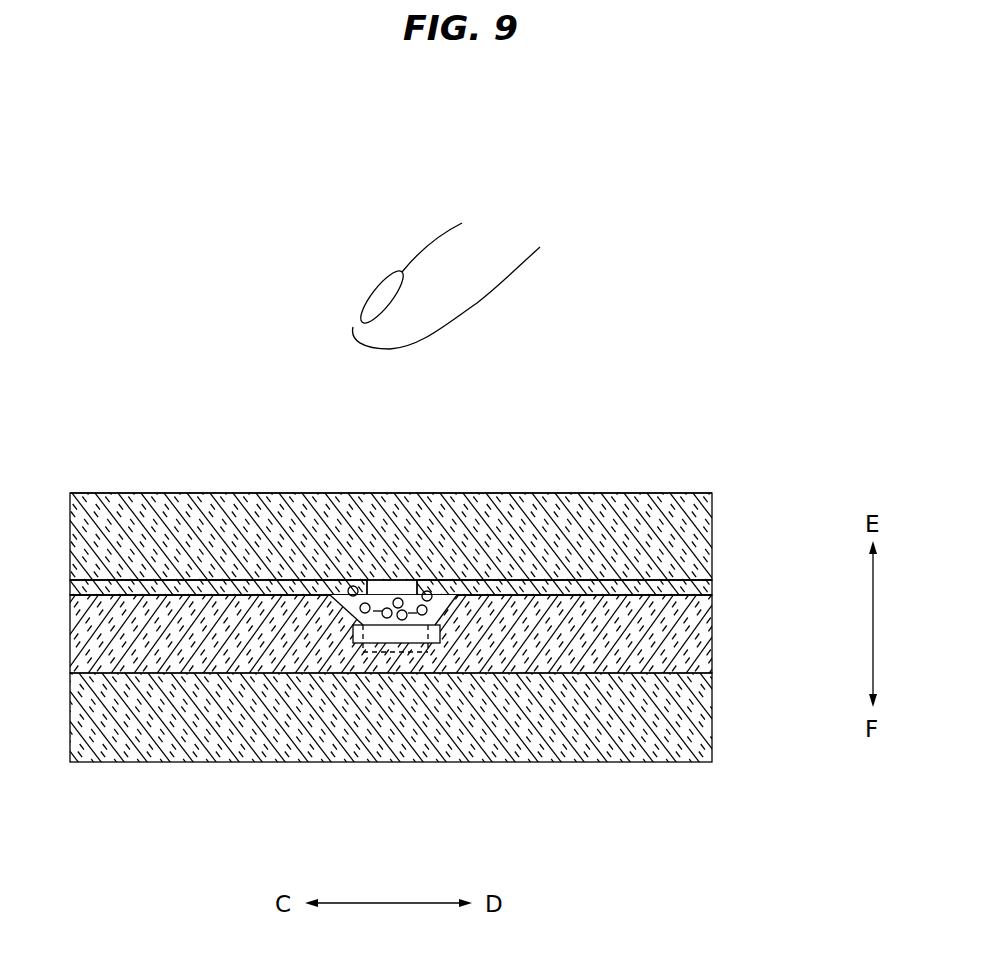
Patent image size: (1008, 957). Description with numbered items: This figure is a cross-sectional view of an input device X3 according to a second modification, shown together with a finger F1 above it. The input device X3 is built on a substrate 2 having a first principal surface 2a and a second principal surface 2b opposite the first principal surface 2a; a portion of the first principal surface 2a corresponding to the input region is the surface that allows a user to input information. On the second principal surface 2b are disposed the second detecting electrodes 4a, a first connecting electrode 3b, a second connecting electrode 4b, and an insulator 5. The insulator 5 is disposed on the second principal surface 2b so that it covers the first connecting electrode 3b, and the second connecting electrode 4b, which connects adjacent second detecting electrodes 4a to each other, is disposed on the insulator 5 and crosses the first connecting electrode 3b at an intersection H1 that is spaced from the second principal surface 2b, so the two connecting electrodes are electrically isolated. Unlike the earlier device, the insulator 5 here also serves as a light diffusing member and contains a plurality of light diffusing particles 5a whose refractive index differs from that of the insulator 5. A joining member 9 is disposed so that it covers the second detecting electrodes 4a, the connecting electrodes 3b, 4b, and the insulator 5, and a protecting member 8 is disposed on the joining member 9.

The finger F1 is at (423, 258).
The input device X3 is at (723, 328).
The substrate 2 is at (713, 535).
The first principal surface 2a is at (663, 493).
The second principal surface 2b is at (688, 594).
The second detecting electrodes 4a is at (210, 592).
The second connecting electrode 4b is at (392, 632).
The first connecting electrode 3b is at (397, 592).
The insulator 5 is at (437, 590).
The light diffusing particles 5a is at (430, 593).
The intersection H1 is at (428, 655).
The joining member 9 is at (713, 633).
The protecting member 8 is at (713, 717).